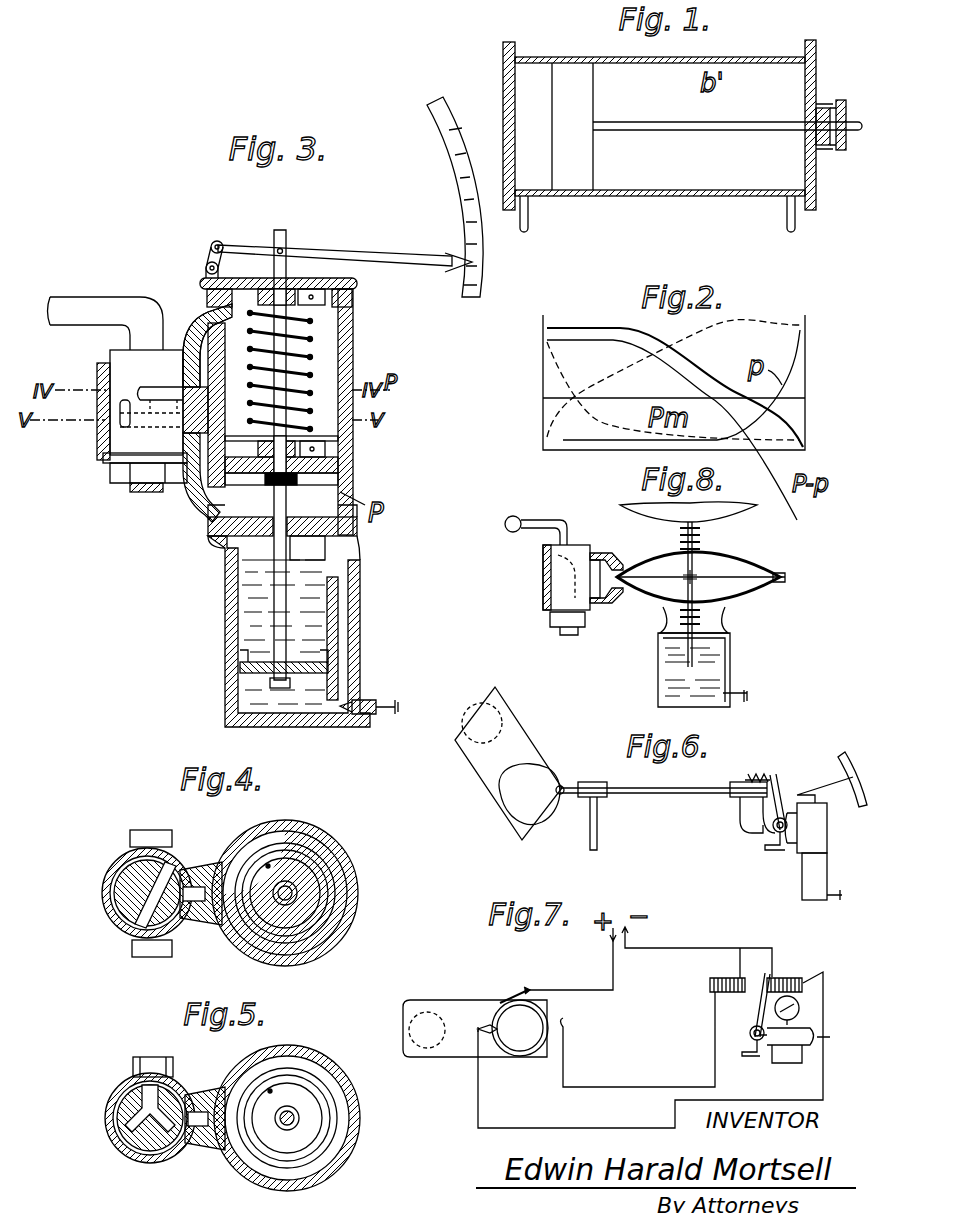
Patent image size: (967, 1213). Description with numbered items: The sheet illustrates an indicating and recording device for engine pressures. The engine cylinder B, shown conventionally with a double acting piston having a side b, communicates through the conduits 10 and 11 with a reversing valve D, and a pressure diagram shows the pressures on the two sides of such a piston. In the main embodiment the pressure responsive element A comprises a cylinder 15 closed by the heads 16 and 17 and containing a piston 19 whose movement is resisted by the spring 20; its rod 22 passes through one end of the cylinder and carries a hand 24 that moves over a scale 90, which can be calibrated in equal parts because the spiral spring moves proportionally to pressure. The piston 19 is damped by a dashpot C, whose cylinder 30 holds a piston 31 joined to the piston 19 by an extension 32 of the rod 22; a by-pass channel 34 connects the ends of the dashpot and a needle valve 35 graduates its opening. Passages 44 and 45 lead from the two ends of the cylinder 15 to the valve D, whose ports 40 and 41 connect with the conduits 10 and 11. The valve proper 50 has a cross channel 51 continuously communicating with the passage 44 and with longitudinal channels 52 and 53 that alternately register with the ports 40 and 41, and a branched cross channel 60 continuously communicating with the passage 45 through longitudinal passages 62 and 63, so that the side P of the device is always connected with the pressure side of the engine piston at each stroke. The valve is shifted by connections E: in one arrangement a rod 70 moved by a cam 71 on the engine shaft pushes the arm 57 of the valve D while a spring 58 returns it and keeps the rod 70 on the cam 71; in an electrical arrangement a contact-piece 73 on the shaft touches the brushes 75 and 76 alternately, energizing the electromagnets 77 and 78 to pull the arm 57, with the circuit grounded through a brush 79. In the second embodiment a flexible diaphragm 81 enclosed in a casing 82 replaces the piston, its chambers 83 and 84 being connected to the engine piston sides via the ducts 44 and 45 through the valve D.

In FIG. 1, the conduit 10 is at (528, 214).
In FIG. 1, the conduit 11 is at (787, 214).
In FIG. 3, the cylinder 15 is at (353, 372).
In FIG. 4, the cylinder 15 is at (352, 884).
In FIG. 5, the cylinder 15 is at (357, 1122).
In FIG. 3, the head 16 is at (307, 548).
In FIG. 3, the head 17 is at (290, 258).
In FIG. 3, the piston 19 is at (340, 478).
In FIG. 4, the piston 19 is at (325, 913).
In FIG. 5, the piston 19 is at (322, 1100).
In FIG. 3, the spring 20 is at (352, 298).
In FIG. 5, the spring 20 is at (298, 1085).
In FIG. 3, the rod 22 is at (288, 232).
In FIG. 3, the hand 24 is at (388, 258).
In FIG. 3, the cylinder 30 is at (228, 612).
In FIG. 3, the piston 31 is at (240, 668).
In FIG. 3, the extension 32 is at (298, 598).
In FIG. 3, the by-pass channel 34 is at (340, 652).
In FIG. 3, the needle valve 35 is at (380, 718).
In FIG. 4, the port 40 is at (158, 832).
In FIG. 5, the port 40 is at (133, 1065).
In FIG. 4, the port 41 is at (155, 955).
In FIG. 3, the passage 44 is at (196, 322).
In FIG. 8, the passage 44 is at (600, 552).
In FIG. 4, the passage 44 is at (205, 865).
In FIG. 3, the passage 45 is at (194, 490).
In FIG. 8, the passage 45 is at (608, 605).
In FIG. 5, the passage 45 is at (200, 1150).
In FIG. 3, the valve 50 is at (118, 360).
In FIG. 4, the valve 50 is at (110, 893).
In FIG. 5, the valve 50 is at (113, 1118).
In FIG. 3, the cross channel 51 is at (165, 378).
In FIG. 4, the cross channel 51 is at (178, 915).
In FIG. 3, the longitudinal channel 52 is at (130, 418).
In FIG. 4, the longitudinal channel 52 is at (135, 947).
In FIG. 4, the longitudinal channel 53 is at (195, 850).
In FIG. 3, the arm 57 is at (100, 298).
In FIG. 8, the arm 57 is at (530, 508).
In FIG. 6, the arm 57 is at (785, 778).
In FIG. 7, the arm 57 is at (762, 1005).
In FIG. 6, the spring 58 is at (770, 772).
In FIG. 3, the cross channel 60 is at (155, 488).
In FIG. 5, the cross channel 60 is at (155, 1150).
In FIG. 5, the longitudinal passage 62 is at (170, 1085).
In FIG. 3, the longitudinal passage 63 is at (120, 435).
In FIG. 5, the longitudinal passage 63 is at (125, 1150).
In FIG. 6, the rod 70 is at (680, 788).
In FIG. 6, the cam 71 is at (528, 818).
In FIG. 7, the contact-piece 73 is at (497, 1040).
In FIG. 7, the brush 75 is at (478, 1040).
In FIG. 7, the brush 76 is at (567, 1035).
In FIG. 7, the electromagnet 77 is at (715, 978).
In FIG. 7, the electromagnet 78 is at (790, 978).
In FIG. 7, the brush 79 is at (506, 993).
In FIG. 8, the flexible diaphragm 81 is at (735, 575).
In FIG. 8, the casing 82 is at (750, 595).
In FIG. 8, the chamber 83 is at (655, 590).
In FIG. 8, the chamber 84 is at (655, 565).
In FIG. 3, the scale 90 is at (446, 140).
In FIG. 3, the pressure responsive element A is at (299, 365).
In FIG. 8, the pressure responsive element A is at (716, 577).
In FIG. 1, the engine cylinder B is at (659, 134).
In FIG. 1, the piston side b is at (561, 126).
In FIG. 3, the dashpot C is at (296, 631).
In FIG. 8, the dashpot C is at (725, 665).
In FIG. 3, the reversing valve D is at (120, 409).
In FIG. 8, the reversing valve D is at (547, 590).
In FIG. 4, the reversing valve D is at (70, 916).
In FIG. 5, the reversing valve D is at (58, 1141).
In FIG. 6, the reversing valve D is at (812, 826).
In FIG. 7, the reversing valve D is at (787, 1042).
In FIG. 6, the connections E is at (555, 763).
In FIG. 7, the connections E is at (505, 1026).
In FIG. 2, the side of pressure responsive device P is at (590, 324).